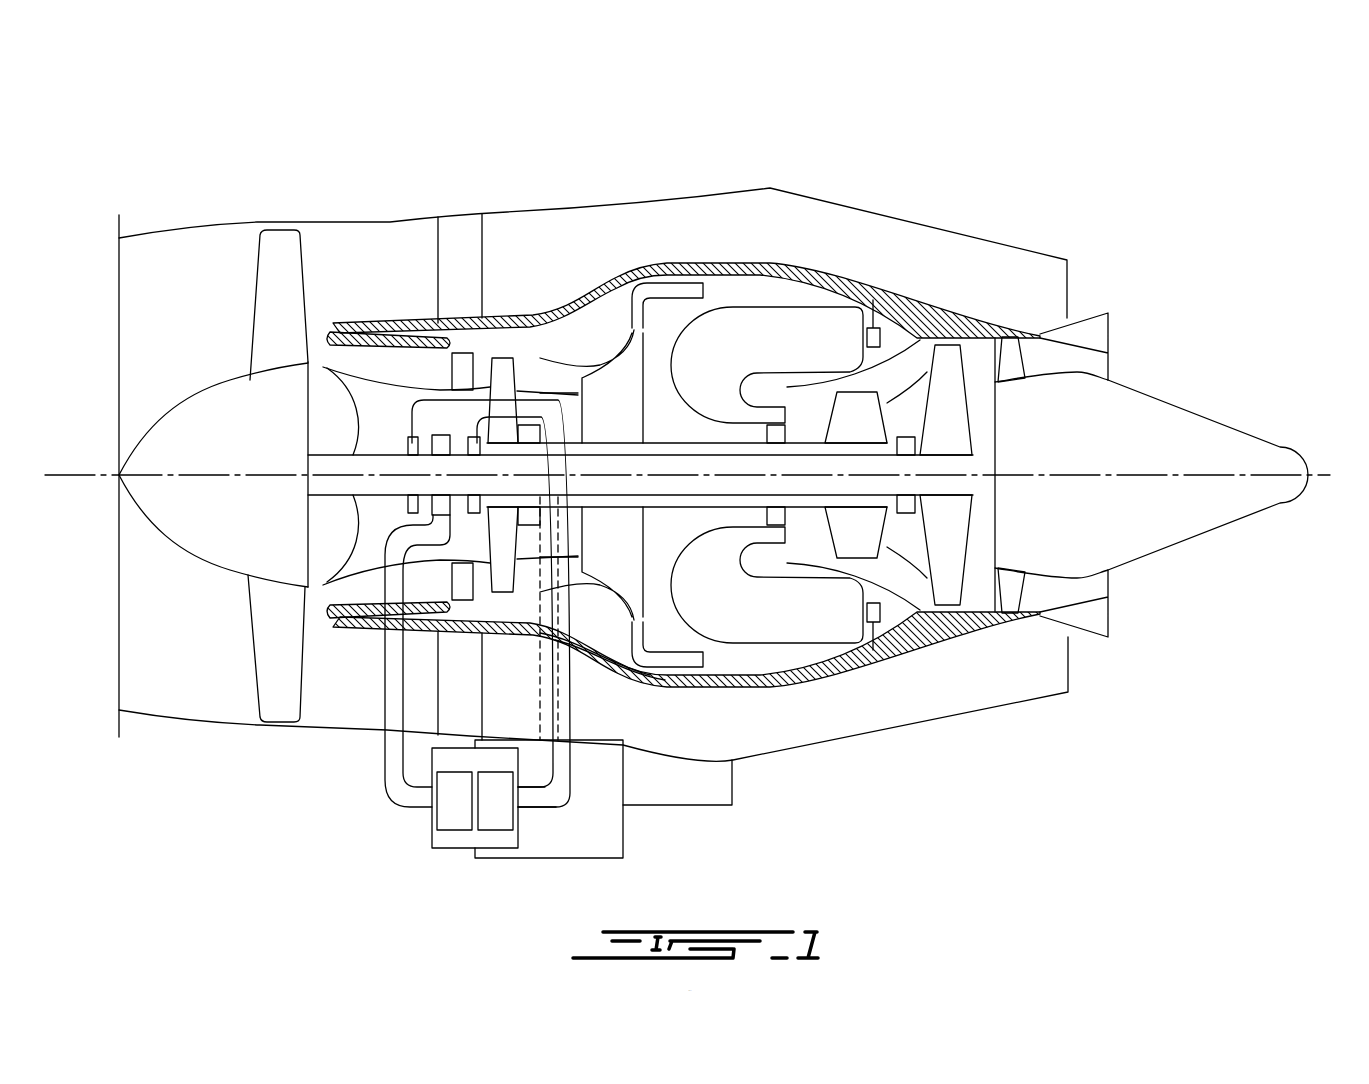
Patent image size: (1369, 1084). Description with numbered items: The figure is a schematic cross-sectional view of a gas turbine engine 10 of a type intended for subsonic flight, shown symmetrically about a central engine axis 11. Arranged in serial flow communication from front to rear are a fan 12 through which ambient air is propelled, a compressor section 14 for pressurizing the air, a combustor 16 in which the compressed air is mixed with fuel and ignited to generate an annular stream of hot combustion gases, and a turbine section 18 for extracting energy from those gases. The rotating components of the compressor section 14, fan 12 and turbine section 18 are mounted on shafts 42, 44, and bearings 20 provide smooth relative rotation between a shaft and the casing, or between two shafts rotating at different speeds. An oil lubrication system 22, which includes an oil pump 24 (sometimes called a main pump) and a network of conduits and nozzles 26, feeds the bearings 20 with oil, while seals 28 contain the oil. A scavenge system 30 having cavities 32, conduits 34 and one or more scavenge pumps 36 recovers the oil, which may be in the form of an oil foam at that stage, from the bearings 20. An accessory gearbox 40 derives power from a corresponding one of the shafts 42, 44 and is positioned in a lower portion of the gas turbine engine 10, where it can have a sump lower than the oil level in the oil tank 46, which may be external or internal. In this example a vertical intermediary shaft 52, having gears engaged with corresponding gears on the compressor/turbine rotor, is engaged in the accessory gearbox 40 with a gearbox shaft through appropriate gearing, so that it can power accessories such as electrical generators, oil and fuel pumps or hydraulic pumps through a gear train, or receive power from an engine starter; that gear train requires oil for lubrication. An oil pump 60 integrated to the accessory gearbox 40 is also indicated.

The gas turbine engine 10 is at (882, 185).
The engine central axis 11 is at (1332, 475).
The fan 12 is at (273, 637).
The compressor section 14 is at (538, 370).
The combustor 16 is at (767, 327).
The turbine section 18 is at (905, 545).
The bearings 20 is at (440, 435).
The oil lubrication system 22 is at (385, 765).
The oil pump 24 is at (443, 817).
The network of conduits and nozzles 26 is at (385, 733).
The seals 28 is at (410, 437).
The scavenge system 30 is at (548, 848).
The cavities 32 is at (465, 393).
The conduits 34 is at (560, 807).
The scavenge pumps 36 is at (493, 830).
The accessory gearbox 40 is at (623, 840).
The shaft 42 is at (347, 380).
The shaft 44 is at (670, 443).
The oil tank 46 is at (450, 850).
The vertical intermediary shaft 52 is at (553, 680).
The oil pump 60 is at (1088, 322).